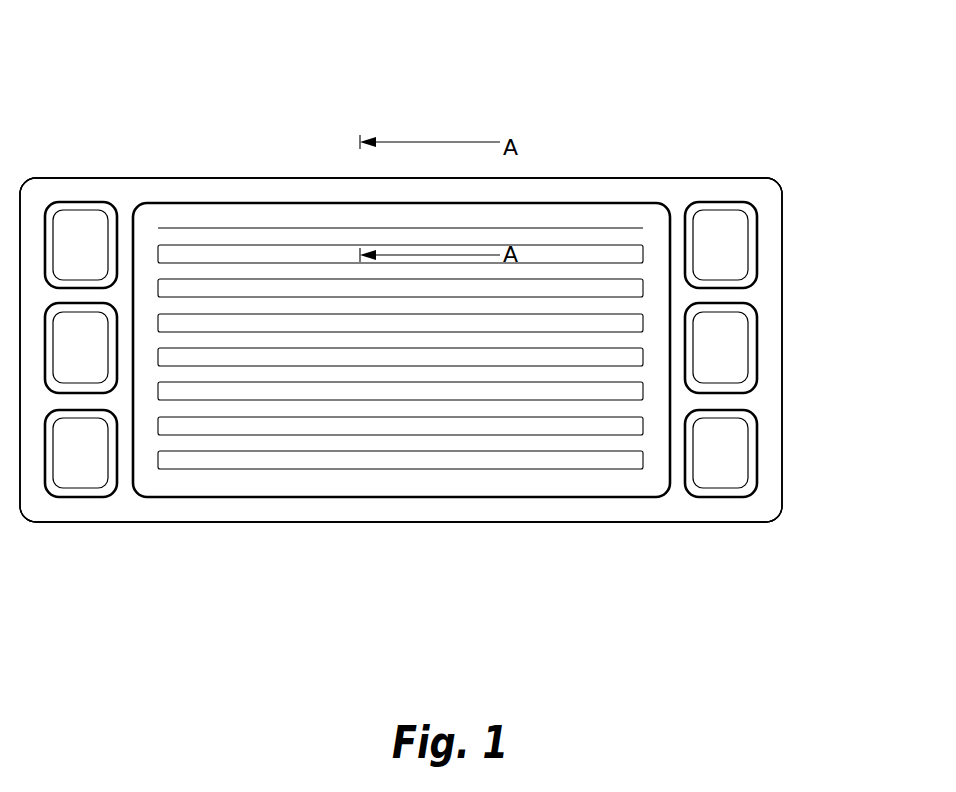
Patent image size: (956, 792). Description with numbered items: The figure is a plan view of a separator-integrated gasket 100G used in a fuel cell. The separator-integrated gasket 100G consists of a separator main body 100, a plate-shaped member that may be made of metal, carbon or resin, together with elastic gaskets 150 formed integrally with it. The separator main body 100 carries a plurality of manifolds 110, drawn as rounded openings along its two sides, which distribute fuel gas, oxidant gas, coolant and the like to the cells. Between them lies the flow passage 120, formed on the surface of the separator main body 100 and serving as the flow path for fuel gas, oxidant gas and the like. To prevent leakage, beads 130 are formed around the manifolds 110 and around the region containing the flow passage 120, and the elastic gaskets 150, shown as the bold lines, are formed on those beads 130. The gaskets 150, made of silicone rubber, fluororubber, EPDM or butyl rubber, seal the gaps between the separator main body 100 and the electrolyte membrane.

The separator-integrated gasket 100G is at (698, 107).
The separator main body 100 is at (597, 192).
The manifold 110 is at (107, 455).
The flow passage 120 is at (335, 453).
The bead 130 is at (82, 201).
The elastic gasket 150 is at (248, 203).